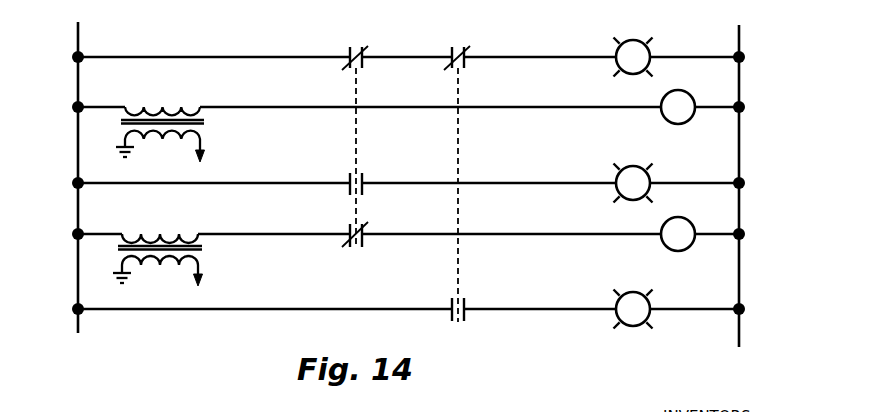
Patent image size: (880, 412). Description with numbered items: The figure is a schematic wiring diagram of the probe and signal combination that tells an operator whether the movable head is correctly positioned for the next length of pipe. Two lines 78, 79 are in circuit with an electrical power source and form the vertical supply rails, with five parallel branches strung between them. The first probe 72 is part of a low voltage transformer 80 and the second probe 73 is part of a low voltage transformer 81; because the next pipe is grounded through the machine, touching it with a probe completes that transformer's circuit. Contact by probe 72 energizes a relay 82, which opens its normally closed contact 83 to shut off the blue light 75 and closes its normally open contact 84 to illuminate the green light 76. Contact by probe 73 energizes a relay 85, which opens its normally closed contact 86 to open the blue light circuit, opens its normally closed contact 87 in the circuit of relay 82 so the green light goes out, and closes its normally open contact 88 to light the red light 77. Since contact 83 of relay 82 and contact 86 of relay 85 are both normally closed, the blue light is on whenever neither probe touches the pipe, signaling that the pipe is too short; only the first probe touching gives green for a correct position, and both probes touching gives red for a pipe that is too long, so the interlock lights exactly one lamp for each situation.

The line 78 is at (78, 34).
The line 79 is at (741, 36).
The low voltage transformer 81 is at (163, 108).
The second probe 73 is at (204, 150).
The low voltage transformer 80 is at (173, 234).
The first probe 72 is at (204, 278).
The normally closed contact 86 is at (362, 44).
The normally closed contact 83 is at (464, 44).
The normally open contact 88 is at (364, 173).
The normally closed contact 87 is at (364, 224).
The normally open contact 84 is at (466, 305).
The blue light 75 is at (646, 52).
The relay 85 is at (667, 124).
The red light 77 is at (619, 180).
The relay 82 is at (684, 251).
The green light 76 is at (644, 292).